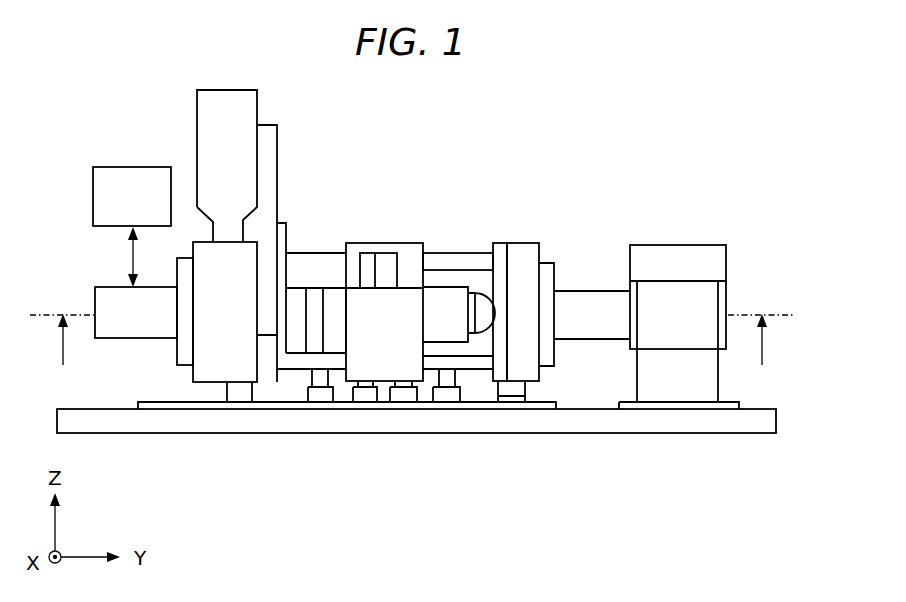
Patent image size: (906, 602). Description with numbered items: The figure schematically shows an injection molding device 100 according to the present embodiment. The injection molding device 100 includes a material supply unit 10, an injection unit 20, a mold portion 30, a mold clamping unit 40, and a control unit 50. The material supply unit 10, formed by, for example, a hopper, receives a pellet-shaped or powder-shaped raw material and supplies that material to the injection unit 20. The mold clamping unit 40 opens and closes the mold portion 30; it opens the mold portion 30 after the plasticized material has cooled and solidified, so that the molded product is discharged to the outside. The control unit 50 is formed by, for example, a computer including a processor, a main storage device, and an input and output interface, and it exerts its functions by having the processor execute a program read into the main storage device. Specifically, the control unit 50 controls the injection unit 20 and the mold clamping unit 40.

The material supply unit 10 is at (163, 93).
The injection unit 20 is at (80, 292).
The mold portion 30 is at (469, 223).
The mold clamping unit 40 is at (706, 222).
The control unit 50 is at (118, 183).
The injection molding device 100 is at (658, 185).